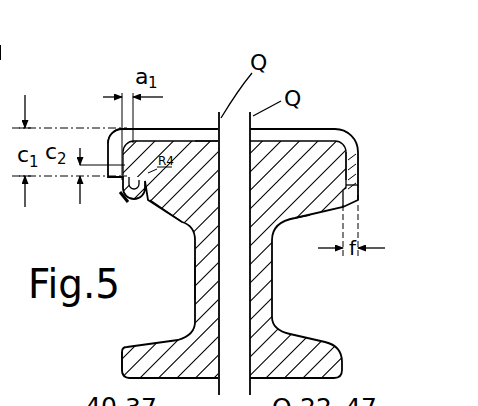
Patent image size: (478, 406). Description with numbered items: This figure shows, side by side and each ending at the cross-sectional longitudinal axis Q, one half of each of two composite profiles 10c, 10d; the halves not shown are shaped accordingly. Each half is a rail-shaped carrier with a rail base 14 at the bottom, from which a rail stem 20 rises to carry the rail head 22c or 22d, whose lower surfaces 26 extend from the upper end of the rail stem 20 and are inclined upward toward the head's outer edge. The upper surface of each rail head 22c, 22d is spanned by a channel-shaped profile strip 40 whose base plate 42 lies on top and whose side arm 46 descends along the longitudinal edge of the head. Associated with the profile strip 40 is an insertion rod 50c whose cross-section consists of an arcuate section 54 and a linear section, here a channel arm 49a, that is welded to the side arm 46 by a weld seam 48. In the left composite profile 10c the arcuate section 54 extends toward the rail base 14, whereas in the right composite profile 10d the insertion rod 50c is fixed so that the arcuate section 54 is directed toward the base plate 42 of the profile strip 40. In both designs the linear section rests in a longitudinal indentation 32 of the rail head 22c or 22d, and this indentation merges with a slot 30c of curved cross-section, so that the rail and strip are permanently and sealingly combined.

The composite profile 10c is at (98, 336).
The composite profile 10d is at (303, 319).
The base plate 42 is at (178, 135).
The rail head 22c is at (199, 138).
The rail head 22d is at (292, 198).
The profile strip 40 is at (315, 124).
The insertion rod 50c is at (334, 154).
The arcuate section 54 is at (349, 146).
The slot 30c is at (352, 166).
The weld seam 48 is at (357, 189).
The longitudinal indentation 32 is at (360, 213).
The side arm 46 is at (110, 147).
The channel arm 49a is at (121, 198).
The lower surface 26 is at (167, 222).
The rail stem 20 is at (272, 293).
The rail base 14 is at (128, 364).